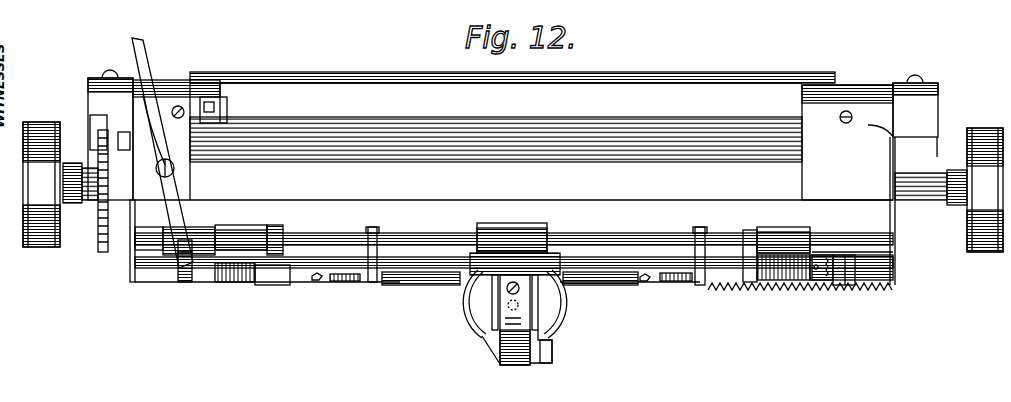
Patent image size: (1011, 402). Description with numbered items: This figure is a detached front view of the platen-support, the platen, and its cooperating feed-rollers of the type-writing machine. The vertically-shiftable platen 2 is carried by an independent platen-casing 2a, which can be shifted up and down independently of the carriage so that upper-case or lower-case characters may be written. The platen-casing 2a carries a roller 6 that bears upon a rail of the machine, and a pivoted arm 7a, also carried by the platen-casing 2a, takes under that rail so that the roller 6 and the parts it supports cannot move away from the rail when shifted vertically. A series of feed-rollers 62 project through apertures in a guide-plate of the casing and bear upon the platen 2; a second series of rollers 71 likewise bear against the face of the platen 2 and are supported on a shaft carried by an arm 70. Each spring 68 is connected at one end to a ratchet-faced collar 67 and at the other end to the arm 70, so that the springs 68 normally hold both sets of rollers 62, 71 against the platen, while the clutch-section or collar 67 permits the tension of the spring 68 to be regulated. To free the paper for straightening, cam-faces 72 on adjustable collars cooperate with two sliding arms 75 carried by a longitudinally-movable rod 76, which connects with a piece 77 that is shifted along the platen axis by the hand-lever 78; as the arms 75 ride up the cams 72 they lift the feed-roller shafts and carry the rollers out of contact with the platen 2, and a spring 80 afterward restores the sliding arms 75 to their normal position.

The platen 2 is at (513, 136).
The platen-casing 2a is at (128, 240).
The roller 6 is at (556, 306).
The pivoted arm 7a is at (492, 333).
The feed-rollers 62 is at (258, 285).
The ratchet-faced collar 67 is at (805, 290).
The spring 68 is at (236, 282).
The arm 70 is at (285, 238).
The rollers 71 is at (247, 238).
The cam-faces 72 is at (342, 288).
The sliding arms 75 is at (380, 228).
The longitudinally-movable rod 76 is at (638, 270).
The piece 77 is at (180, 272).
The hand-lever 78 is at (162, 153).
The spring 80 is at (830, 290).